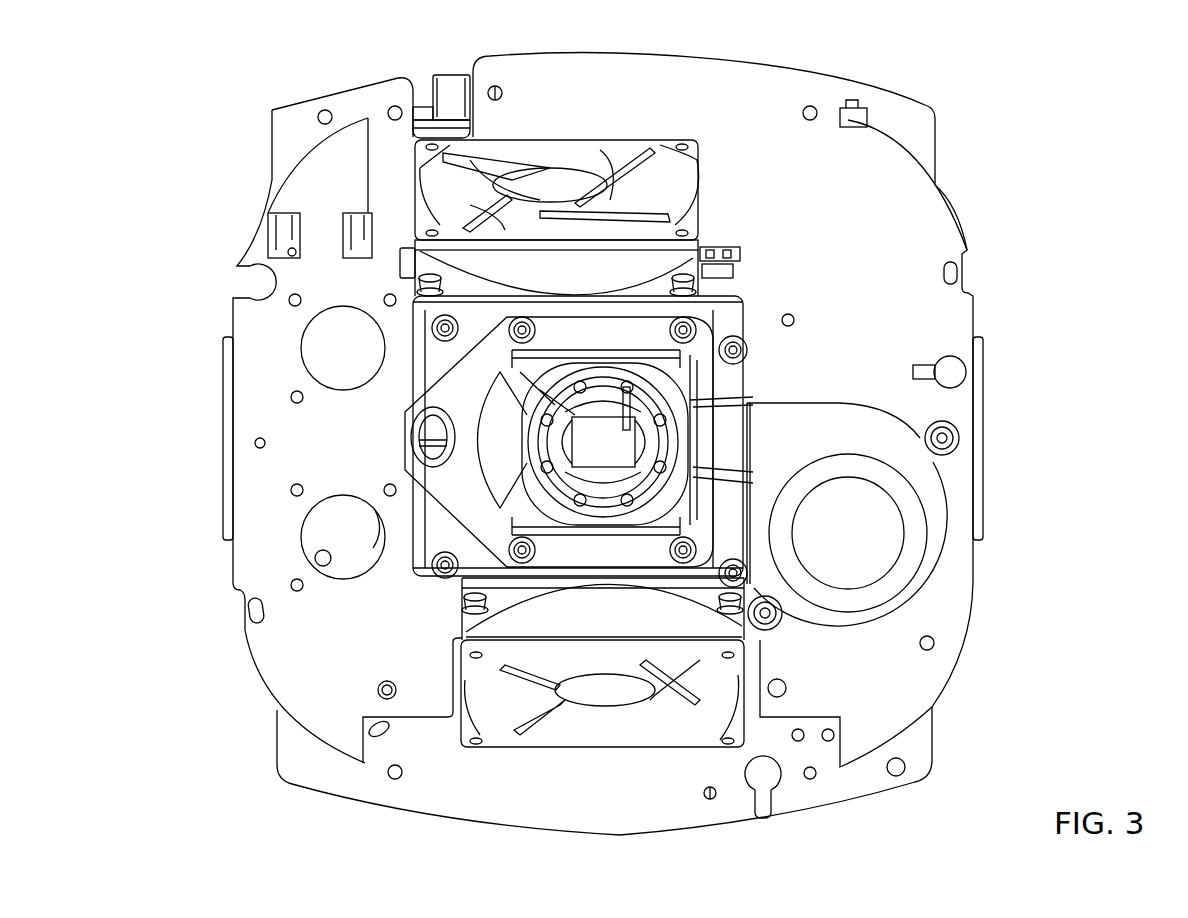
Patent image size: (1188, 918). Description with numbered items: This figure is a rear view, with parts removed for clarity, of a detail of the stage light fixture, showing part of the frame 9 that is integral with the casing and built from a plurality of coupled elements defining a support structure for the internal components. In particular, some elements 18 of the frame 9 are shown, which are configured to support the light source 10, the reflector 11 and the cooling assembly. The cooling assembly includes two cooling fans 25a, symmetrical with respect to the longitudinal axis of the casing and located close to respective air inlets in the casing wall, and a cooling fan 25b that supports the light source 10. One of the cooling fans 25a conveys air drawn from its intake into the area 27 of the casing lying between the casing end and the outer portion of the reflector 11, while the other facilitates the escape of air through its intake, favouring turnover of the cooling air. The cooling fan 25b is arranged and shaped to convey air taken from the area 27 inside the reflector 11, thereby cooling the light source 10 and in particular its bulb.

The frame 9 is at (906, 99).
The area of the casing 27 is at (278, 341).
The support elements 18 is at (760, 90).
The cooling fans 25a is at (560, 137).
The cooling fan 25b is at (858, 423).
The light source 10 is at (508, 453).
The reflector 11 is at (513, 427).